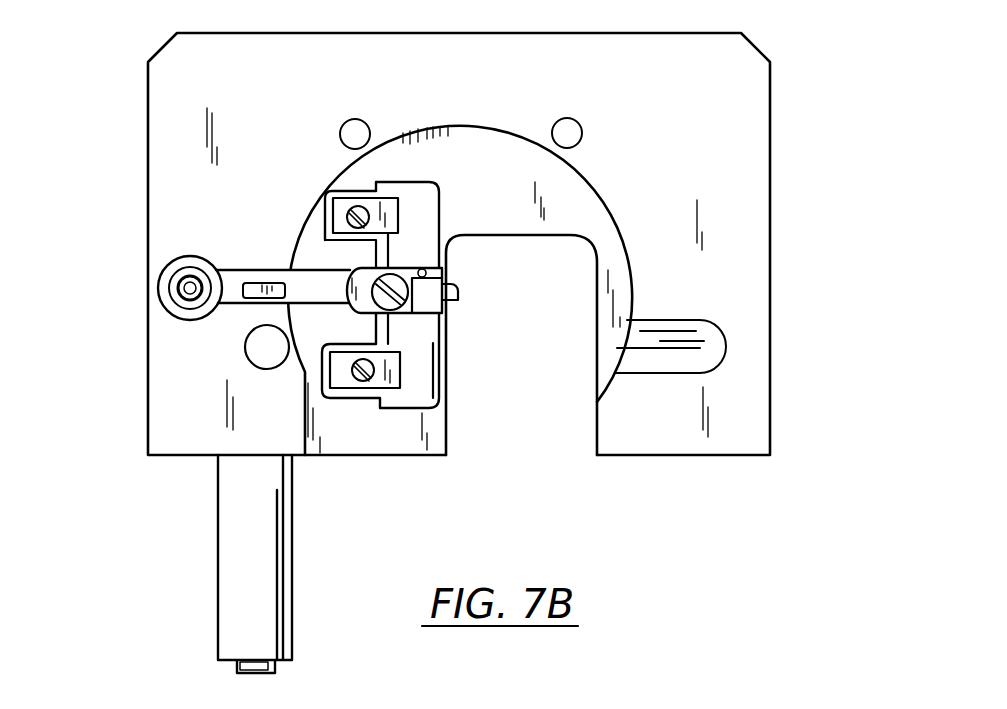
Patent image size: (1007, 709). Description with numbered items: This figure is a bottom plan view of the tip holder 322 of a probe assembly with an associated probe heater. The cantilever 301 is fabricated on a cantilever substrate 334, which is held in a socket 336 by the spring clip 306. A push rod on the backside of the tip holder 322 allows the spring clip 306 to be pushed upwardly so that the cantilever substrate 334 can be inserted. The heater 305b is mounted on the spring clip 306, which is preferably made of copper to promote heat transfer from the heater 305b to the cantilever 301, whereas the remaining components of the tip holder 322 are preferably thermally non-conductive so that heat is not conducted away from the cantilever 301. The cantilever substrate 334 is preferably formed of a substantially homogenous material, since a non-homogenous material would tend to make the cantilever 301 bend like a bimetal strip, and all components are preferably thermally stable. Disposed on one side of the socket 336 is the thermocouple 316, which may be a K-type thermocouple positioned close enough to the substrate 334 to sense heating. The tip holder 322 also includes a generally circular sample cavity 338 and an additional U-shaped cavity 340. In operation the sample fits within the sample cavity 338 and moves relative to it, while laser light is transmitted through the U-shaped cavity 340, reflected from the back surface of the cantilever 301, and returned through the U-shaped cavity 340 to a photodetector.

The tip holder 322 is at (771, 157).
The sample cavity 338 is at (535, 193).
The U-shaped cavity 340 is at (542, 438).
The thermocouple 316 is at (443, 230).
The spring clip 306 is at (186, 294).
The heater 305b is at (154, 332).
The cantilever substrate 334 is at (447, 278).
The socket 336 is at (443, 268).
The cantilever 301 is at (448, 288).